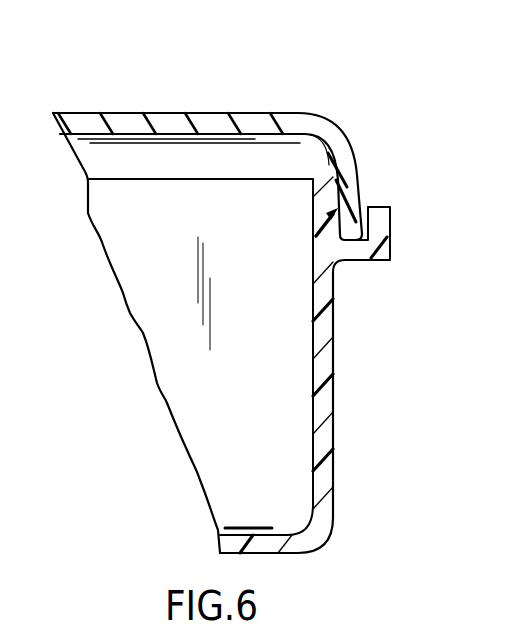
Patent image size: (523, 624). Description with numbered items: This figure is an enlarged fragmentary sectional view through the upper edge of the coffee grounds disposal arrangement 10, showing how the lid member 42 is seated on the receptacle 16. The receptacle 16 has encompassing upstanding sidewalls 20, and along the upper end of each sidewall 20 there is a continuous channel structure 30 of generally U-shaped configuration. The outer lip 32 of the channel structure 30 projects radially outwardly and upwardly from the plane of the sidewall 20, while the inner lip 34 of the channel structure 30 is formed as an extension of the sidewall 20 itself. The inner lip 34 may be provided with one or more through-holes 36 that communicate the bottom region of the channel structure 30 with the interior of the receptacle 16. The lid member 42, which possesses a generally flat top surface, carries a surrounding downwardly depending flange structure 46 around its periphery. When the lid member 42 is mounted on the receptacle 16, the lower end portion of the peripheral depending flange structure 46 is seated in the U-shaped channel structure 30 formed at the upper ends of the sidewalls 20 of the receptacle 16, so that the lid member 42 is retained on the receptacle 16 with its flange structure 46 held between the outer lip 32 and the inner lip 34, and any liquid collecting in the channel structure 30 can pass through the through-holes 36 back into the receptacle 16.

The coffee grounds disposal arrangement 10 is at (124, 110).
The lid member 42 is at (240, 112).
The flange structure 46 is at (353, 160).
The channel structure 30 is at (366, 207).
The outer lip 32 is at (390, 246).
The inner lip 34 is at (313, 200).
The through-holes 36 is at (318, 222).
The sidewalls 20 is at (333, 367).
The receptacle 16 is at (333, 450).